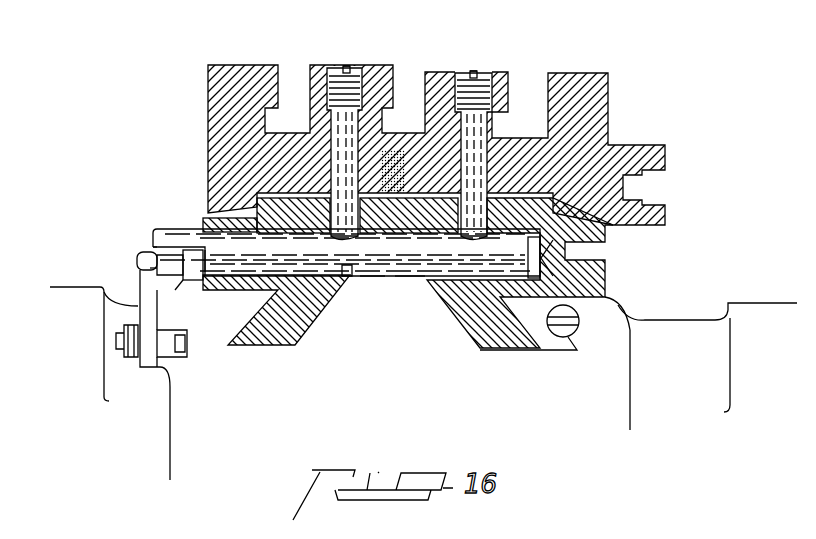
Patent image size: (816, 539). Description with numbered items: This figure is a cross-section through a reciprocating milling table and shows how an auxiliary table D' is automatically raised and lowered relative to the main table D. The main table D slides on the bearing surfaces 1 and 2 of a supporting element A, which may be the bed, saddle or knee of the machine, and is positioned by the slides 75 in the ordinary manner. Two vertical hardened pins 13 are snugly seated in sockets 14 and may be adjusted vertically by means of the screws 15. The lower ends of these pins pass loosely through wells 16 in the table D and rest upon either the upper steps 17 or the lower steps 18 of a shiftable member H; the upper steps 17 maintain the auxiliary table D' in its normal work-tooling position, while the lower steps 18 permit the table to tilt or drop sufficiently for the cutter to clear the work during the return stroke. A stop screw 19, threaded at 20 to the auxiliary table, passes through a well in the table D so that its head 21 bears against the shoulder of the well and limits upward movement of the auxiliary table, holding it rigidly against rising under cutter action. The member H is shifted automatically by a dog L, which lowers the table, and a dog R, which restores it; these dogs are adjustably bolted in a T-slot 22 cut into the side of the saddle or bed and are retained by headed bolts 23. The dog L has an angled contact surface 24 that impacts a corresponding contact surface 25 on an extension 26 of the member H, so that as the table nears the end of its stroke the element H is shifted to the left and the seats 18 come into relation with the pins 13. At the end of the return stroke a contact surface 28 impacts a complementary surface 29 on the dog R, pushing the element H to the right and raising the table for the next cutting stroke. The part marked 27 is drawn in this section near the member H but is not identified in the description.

The bearing surface 1 is at (226, 292).
The bearing surface 2 is at (582, 299).
The hardened pin 13 is at (467, 140).
The socket 14 is at (333, 119).
The screw 15 is at (463, 72).
The well 16 is at (327, 214).
The upper step 17 is at (335, 240).
The lower step 18 is at (495, 238).
The screw 19 is at (371, 280).
The threaded portion 20 is at (406, 171).
The head 21 is at (415, 281).
The T-slot 22 is at (190, 350).
The headed bolt 23 is at (118, 338).
The contact surface 24 is at (193, 265).
The contact surface 25 is at (189, 283).
The extension 26 is at (160, 247).
The bar slot 27 is at (250, 274).
The contact surface 28 is at (156, 268).
The complementary surface 29 is at (150, 262).
The slide 75 is at (534, 322).
The main table D is at (408, 281).
The auxiliary table D' is at (398, 145).
The shiftable member H is at (172, 233).
The dog R is at (148, 265).
The dog L is at (170, 273).
The supporting element A is at (661, 330).